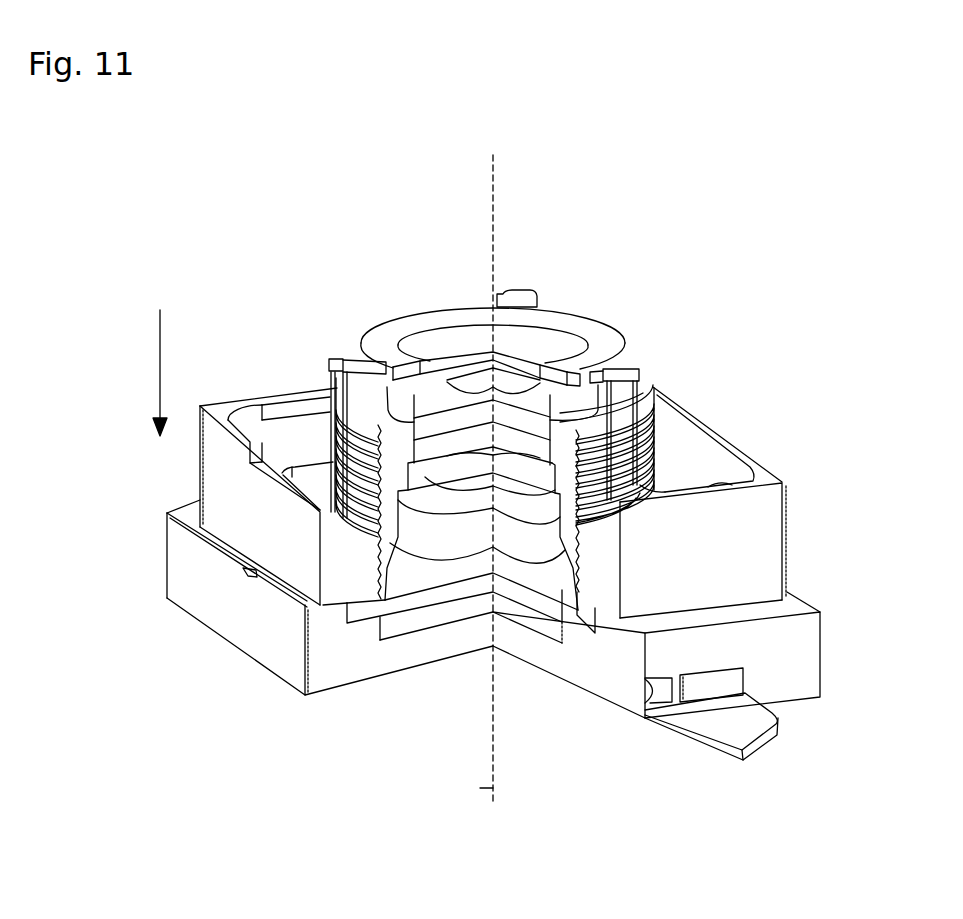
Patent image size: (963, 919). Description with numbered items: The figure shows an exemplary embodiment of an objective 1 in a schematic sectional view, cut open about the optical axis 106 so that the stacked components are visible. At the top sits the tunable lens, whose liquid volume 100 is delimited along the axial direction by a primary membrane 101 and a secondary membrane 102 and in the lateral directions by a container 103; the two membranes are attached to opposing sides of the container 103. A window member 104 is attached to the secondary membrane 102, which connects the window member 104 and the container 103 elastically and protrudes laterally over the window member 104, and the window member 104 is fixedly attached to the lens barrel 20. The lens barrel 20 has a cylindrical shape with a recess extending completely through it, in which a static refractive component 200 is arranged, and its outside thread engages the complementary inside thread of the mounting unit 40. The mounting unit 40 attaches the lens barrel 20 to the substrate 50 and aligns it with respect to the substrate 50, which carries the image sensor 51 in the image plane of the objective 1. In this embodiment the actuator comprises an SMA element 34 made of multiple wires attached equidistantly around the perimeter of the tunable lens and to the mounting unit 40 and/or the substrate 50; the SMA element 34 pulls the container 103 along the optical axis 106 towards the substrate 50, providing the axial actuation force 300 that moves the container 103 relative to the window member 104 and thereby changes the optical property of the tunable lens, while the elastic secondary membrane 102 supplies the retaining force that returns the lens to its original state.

The objective 1 is at (778, 205).
The lens barrel 20 is at (620, 405).
The SMA element 34 is at (333, 385).
The mounting unit 40 is at (746, 532).
The substrate 50 is at (785, 663).
The image sensor 51 is at (525, 620).
The liquid volume 100 is at (500, 294).
The primary membrane 101 is at (507, 350).
The secondary membrane 102 is at (543, 370).
The container 103 is at (560, 372).
The window member 104 is at (455, 366).
The optical axis 106 is at (490, 787).
The static refractive component 200 is at (405, 583).
The actuation force 300 is at (160, 372).